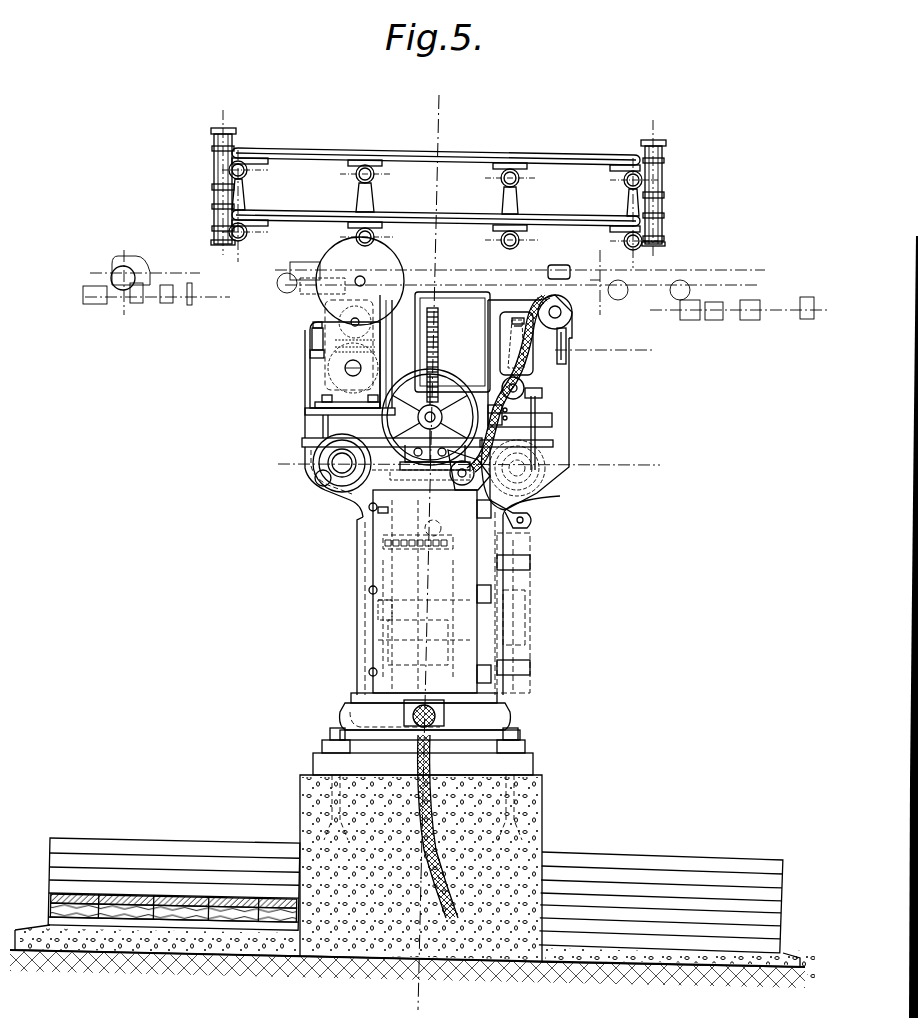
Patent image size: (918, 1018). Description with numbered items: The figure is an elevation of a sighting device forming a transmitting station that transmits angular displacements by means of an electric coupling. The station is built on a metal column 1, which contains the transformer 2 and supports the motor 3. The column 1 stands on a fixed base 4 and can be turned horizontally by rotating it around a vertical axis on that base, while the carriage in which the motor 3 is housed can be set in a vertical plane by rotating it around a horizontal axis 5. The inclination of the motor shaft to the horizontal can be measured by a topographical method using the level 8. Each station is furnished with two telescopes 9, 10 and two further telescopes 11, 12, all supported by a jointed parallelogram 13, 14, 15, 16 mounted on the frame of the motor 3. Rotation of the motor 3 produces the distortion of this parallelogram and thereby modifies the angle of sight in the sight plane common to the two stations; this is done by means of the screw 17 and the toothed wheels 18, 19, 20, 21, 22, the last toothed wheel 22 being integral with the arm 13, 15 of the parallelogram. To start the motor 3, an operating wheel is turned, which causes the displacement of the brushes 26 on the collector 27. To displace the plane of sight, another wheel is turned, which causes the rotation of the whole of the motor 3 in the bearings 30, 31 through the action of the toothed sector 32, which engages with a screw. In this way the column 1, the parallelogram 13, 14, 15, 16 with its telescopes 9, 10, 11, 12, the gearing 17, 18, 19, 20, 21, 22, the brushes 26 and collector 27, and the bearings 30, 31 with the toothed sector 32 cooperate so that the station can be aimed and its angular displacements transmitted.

The metal column 1 is at (360, 576).
The transformer 2 is at (430, 591).
The motor 3 is at (452, 342).
The fixed base 4 is at (320, 764).
The horizontal axis 5 is at (434, 414).
The level 8 is at (322, 397).
The telescope 9 is at (231, 233).
The telescope 10 is at (214, 182).
The telescope 11 is at (644, 246).
The telescope 12 is at (666, 187).
The arm of jointed parallelogram 13 is at (365, 162).
The arm of jointed parallelogram 14 is at (510, 168).
The arm of jointed parallelogram 15 is at (360, 218).
The arm of jointed parallelogram 16 is at (507, 221).
The screw 17 is at (370, 352).
The toothed wheel 18 is at (310, 352).
The toothed wheel 19 is at (328, 370).
The toothed wheel 20 is at (318, 306).
The toothed wheel 21 is at (355, 326).
The toothed wheel 22 is at (352, 237).
The brushes 26 is at (378, 609).
The collector 27 is at (424, 595).
The bearing 30 is at (311, 333).
The bearing 31 is at (552, 361).
The toothed sector 32 is at (440, 353).